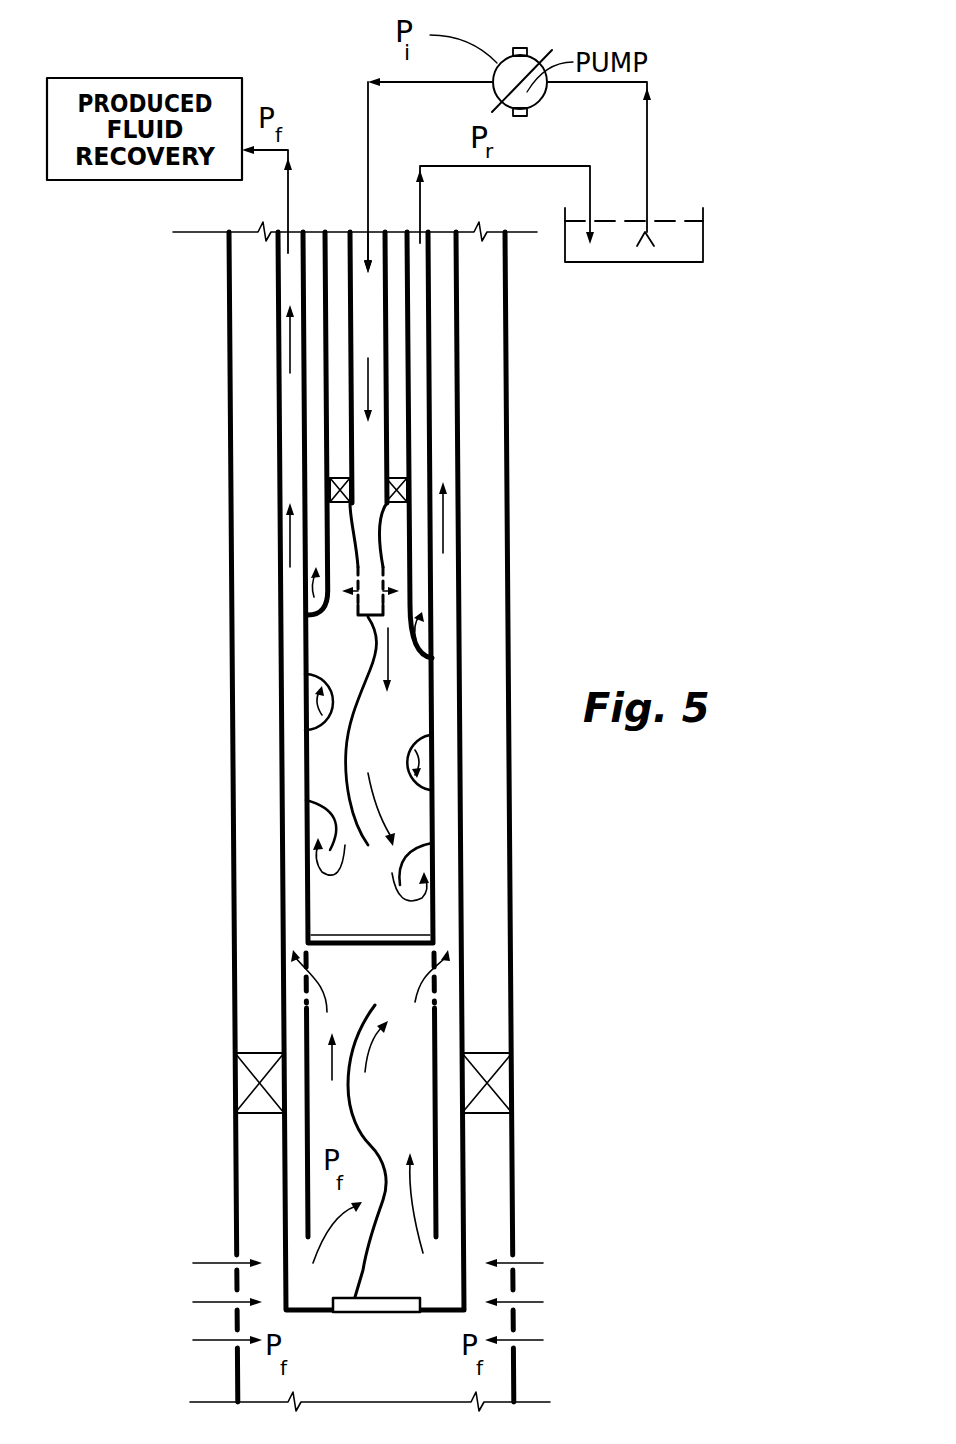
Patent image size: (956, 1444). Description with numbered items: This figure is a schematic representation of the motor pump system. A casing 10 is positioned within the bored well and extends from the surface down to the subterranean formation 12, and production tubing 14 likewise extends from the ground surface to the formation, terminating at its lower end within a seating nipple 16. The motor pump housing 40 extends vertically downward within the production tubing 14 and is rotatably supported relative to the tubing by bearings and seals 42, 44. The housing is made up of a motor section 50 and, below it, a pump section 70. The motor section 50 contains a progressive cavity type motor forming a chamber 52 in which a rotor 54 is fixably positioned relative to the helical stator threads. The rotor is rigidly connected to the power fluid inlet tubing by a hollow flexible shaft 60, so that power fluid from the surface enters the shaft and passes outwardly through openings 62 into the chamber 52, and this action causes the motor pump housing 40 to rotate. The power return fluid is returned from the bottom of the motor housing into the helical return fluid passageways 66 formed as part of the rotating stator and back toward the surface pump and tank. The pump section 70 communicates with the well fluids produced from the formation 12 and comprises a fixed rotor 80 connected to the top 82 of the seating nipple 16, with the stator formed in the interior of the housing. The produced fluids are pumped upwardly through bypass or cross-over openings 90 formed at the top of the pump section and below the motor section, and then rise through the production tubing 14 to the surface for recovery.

The casing 10 is at (508, 473).
The subterranean formation 12 is at (175, 1306).
The production tubing 14 is at (461, 624).
The seating nipple 16 is at (498, 1084).
The motor pump housing 40 is at (436, 820).
The bearings and seals 42 is at (330, 487).
The bearings and seals 44 is at (396, 490).
The motor section 50 is at (445, 657).
The chamber 52 is at (322, 652).
The rotor 54 is at (347, 747).
The hollow flexible shaft 60 is at (353, 538).
The openings 62 is at (378, 577).
The helical return fluid passageways 66 is at (433, 773).
The pump section 70 is at (295, 1128).
The fixed rotor 80 is at (366, 1140).
The top of seating nipple 82 is at (378, 1314).
The bypass or cross-over openings 90 is at (308, 1012).